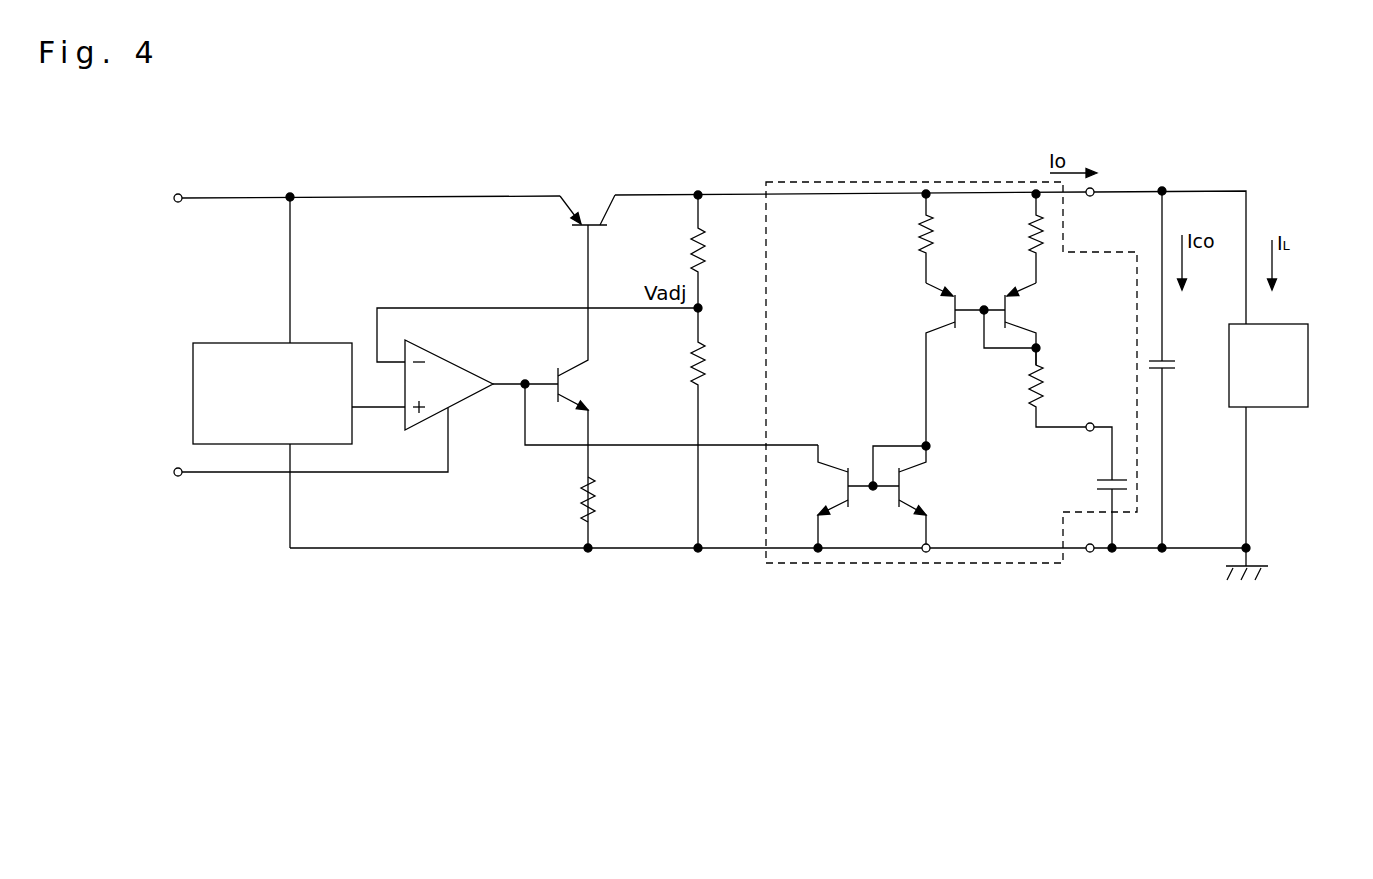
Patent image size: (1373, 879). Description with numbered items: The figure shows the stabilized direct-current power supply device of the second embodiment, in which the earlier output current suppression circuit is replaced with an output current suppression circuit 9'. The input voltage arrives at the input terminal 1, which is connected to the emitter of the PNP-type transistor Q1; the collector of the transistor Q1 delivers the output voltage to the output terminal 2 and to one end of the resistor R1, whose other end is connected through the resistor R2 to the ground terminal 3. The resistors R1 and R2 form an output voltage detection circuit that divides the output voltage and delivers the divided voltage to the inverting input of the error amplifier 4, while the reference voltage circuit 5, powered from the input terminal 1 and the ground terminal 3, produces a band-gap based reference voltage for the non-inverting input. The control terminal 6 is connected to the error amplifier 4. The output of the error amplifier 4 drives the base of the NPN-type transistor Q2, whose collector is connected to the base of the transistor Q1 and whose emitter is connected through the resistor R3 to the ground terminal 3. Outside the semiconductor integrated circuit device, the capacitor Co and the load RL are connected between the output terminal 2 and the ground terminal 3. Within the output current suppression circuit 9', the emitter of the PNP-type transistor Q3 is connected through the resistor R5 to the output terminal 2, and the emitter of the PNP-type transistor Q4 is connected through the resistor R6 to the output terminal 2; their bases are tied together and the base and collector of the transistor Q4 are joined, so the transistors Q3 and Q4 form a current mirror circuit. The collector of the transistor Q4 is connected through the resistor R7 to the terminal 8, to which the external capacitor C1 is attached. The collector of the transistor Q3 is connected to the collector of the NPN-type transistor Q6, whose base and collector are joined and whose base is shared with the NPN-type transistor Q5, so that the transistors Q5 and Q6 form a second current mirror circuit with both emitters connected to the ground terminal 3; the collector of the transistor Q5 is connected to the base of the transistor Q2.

The input terminal 1 is at (178, 193).
The output terminal 2 is at (1092, 198).
The ground terminal 3 is at (1088, 554).
The error amplifier 4 is at (455, 364).
The reference voltage circuit 5 is at (333, 343).
The control terminal 6 is at (178, 468).
The terminal 8 is at (1090, 422).
The output current suppression circuit 9' is at (951, 352).
The PNP-type transistor Q1 is at (588, 193).
The NPN-type transistor Q2 is at (600, 376).
The PNP-type transistor Q3 is at (933, 304).
The PNP-type transistor Q4 is at (1045, 297).
The NPN-type transistor Q5 is at (821, 480).
The NPN-type transistor Q6 is at (940, 472).
The resistor R1 is at (706, 262).
The resistor R2 is at (706, 373).
The resistor R3 is at (602, 505).
The resistor R5 is at (953, 240).
The resistor R6 is at (1030, 227).
The resistor R7 is at (1031, 389).
The capacitor C1 is at (1097, 483).
The capacitor Co is at (1185, 370).
The load RL is at (1319, 332).